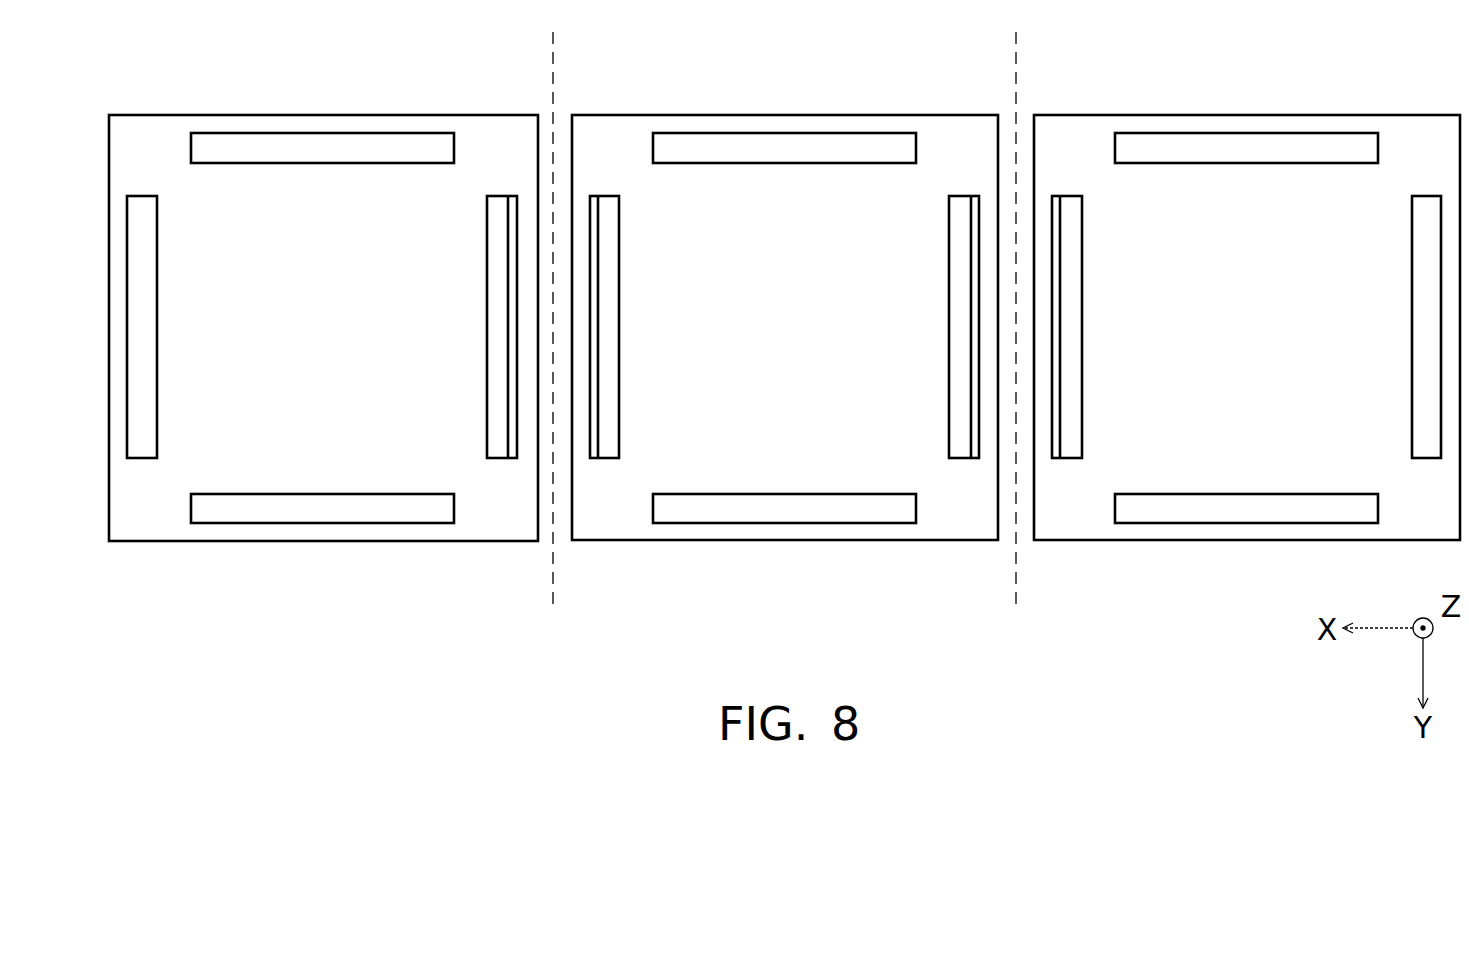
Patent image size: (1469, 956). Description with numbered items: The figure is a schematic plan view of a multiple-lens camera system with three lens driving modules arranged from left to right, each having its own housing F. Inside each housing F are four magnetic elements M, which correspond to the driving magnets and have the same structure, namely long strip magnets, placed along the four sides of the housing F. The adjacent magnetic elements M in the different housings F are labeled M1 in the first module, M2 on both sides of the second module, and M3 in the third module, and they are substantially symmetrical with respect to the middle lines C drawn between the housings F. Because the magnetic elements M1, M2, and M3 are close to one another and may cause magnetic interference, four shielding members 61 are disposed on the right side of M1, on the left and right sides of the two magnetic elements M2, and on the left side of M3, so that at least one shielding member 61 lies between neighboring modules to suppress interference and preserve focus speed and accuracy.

The magnetic element M is at (142, 223).
The magnetic element M1 is at (499, 220).
The magnetic element M2 is at (608, 222).
The magnetic element M3 is at (1071, 222).
The housing F is at (247, 543).
The shielding member 61 is at (513, 443).
The middle line C is at (784, 305).